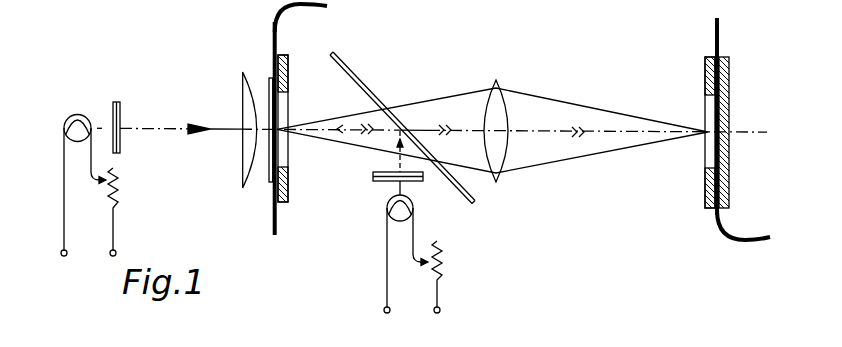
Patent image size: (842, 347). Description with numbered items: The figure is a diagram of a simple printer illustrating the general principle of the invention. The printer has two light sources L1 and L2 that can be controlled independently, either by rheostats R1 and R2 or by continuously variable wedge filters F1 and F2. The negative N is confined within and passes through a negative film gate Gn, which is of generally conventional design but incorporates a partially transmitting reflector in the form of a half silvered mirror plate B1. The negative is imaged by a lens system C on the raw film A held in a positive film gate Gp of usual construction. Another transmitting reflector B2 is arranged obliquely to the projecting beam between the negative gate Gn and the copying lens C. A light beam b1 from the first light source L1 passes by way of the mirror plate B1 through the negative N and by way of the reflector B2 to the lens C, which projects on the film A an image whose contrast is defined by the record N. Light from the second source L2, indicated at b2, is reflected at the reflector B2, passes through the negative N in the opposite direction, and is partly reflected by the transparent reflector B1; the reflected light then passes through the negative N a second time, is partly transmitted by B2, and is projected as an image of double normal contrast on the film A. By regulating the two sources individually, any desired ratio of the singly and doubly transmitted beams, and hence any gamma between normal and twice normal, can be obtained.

The first light source L1 is at (90, 94).
The continuously variable wedge filter F1 is at (118, 101).
The light beam b1 is at (157, 128).
The half silvered mirror plate B1 is at (265, 80).
The negative N is at (273, 25).
The negative film gate Gn is at (260, 187).
The rheostat R1 is at (118, 186).
The transmitting reflector B2 is at (343, 67).
The light beam b2 is at (370, 134).
The continuously variable wedge filter F2 is at (373, 178).
The second light source L2 is at (413, 203).
The rheostat R2 is at (441, 263).
The lens system C is at (496, 82).
The positive film gate Gp is at (701, 90).
The raw film A is at (714, 22).